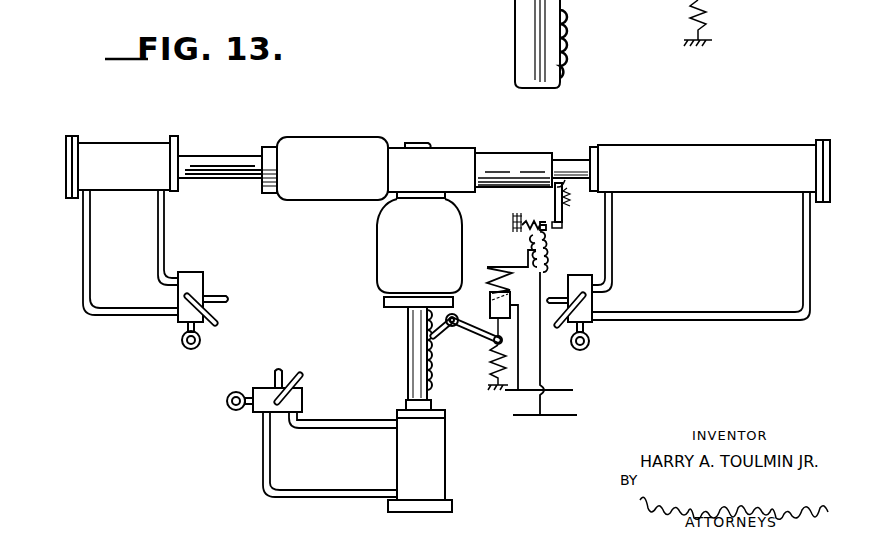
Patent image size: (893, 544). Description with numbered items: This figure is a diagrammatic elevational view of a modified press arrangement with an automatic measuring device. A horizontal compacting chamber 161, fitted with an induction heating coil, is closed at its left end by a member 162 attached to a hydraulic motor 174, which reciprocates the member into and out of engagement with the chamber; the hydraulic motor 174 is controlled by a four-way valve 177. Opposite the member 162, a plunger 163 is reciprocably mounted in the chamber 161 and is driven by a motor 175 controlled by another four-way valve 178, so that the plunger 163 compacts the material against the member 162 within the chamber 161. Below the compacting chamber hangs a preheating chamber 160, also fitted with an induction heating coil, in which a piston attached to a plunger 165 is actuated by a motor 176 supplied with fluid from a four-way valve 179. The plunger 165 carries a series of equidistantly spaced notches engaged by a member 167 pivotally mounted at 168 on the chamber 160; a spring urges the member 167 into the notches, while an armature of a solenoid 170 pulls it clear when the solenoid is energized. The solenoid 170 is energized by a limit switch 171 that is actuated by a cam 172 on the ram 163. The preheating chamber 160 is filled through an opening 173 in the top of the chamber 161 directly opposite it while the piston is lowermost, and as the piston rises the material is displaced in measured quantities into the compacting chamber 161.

The preheating chamber 160 is at (433, 258).
The compacting chamber 161 is at (334, 125).
The member 162 is at (270, 148).
The plunger 163 is at (530, 137).
The plunger 165 is at (416, 352).
The member 167 is at (439, 336).
The pivot 168 is at (462, 314).
The solenoid 170 is at (510, 252).
The limit switch 171 is at (566, 214).
The cam 172 is at (571, 162).
The opening 173 is at (418, 143).
The hydraulic motor 174 is at (127, 163).
The motor 175 is at (799, 130).
The motor 176 is at (410, 458).
The four-way valve 177 is at (195, 284).
The four-way valve 178 is at (590, 306).
The four-way valve 179 is at (300, 400).